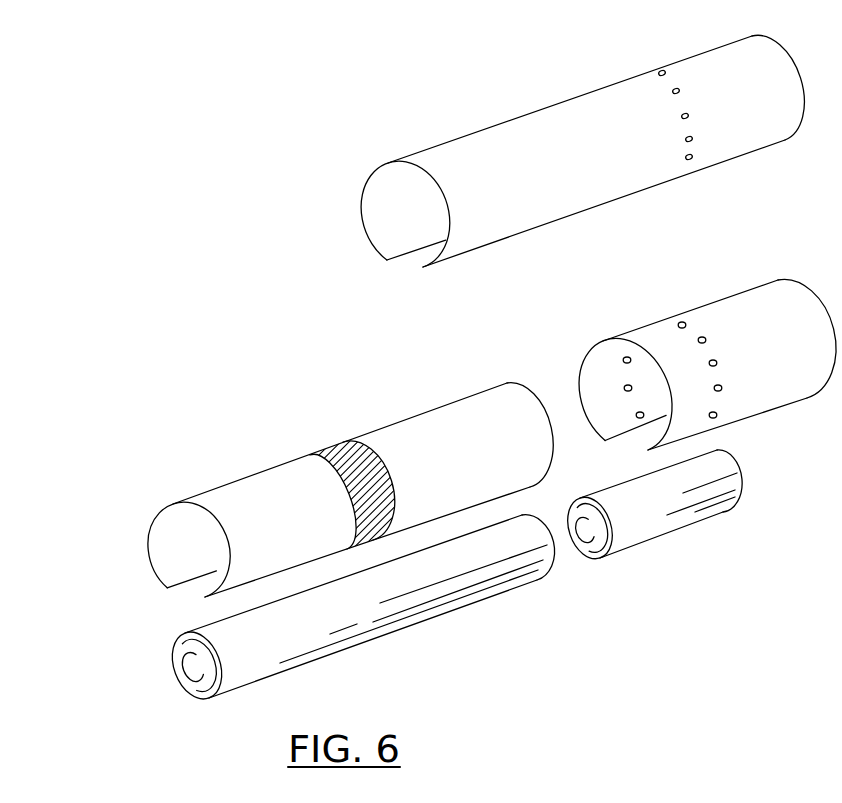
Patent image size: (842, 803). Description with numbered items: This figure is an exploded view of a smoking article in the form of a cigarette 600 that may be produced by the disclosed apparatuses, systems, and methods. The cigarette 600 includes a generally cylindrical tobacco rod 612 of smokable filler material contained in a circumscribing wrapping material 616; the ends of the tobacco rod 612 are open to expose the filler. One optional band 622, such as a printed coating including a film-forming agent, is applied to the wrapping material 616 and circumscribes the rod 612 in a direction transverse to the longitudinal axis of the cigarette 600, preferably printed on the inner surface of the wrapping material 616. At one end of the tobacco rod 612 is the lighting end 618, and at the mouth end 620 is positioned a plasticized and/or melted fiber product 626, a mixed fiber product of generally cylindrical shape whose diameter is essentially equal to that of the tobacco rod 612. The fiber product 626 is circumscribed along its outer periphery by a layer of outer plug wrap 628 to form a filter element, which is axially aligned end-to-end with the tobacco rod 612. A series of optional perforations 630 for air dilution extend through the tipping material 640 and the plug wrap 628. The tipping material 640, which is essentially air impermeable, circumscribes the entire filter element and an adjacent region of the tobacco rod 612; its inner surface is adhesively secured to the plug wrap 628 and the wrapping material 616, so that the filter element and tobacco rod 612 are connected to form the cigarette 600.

The cigarette 600 is at (122, 61).
The tobacco rod 612 is at (293, 653).
The wrapping material 616 is at (497, 403).
The lighting end 618 is at (158, 676).
The mouth end 620 is at (756, 464).
The band 622 is at (330, 442).
The plasticized and/or melted fiber product 626 is at (647, 528).
The plug wrap 628 is at (733, 320).
The perforations 630 is at (692, 158).
The tipping material 640 is at (562, 102).